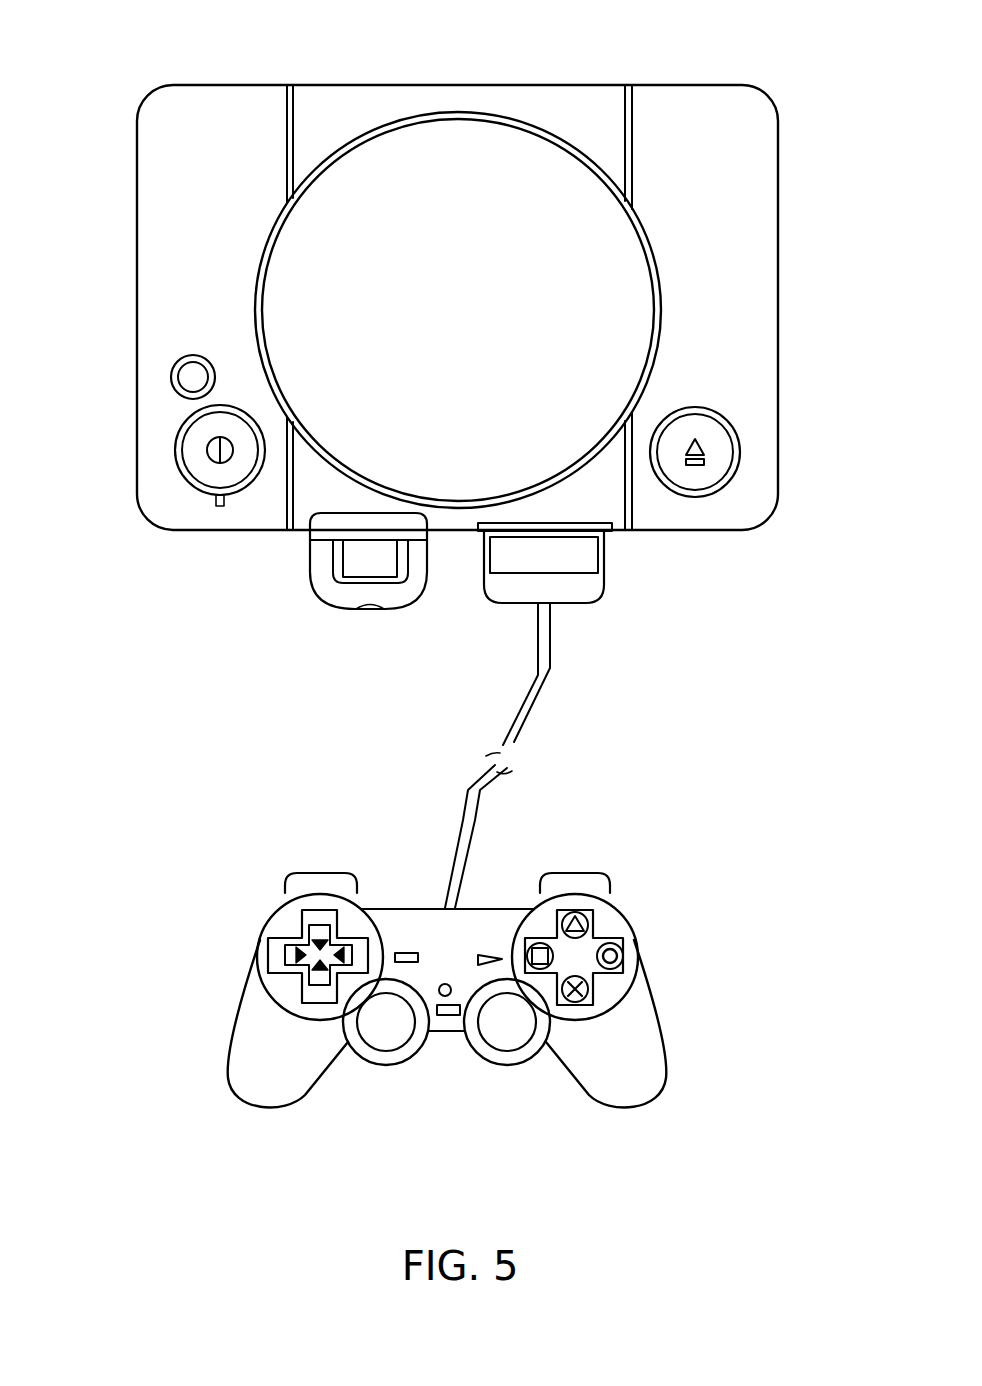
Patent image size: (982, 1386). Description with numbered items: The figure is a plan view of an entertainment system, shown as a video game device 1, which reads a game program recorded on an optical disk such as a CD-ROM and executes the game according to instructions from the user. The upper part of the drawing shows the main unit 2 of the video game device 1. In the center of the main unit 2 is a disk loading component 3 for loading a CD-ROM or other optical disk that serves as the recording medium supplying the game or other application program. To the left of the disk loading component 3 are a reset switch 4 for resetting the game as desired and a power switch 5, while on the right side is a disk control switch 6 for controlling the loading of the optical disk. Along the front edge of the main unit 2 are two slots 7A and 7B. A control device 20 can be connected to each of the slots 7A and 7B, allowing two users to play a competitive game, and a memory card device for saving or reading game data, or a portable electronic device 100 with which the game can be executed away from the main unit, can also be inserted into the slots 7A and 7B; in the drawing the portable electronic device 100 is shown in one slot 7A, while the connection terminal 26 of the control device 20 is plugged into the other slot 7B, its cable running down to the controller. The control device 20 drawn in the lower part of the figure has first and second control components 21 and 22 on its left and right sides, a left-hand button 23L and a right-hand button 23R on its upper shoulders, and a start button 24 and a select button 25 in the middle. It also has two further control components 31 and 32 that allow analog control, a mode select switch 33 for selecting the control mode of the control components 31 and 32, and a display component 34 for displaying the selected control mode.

The video game device 1 is at (685, 73).
The main unit 2 is at (714, 533).
The disk loading component 3 is at (495, 152).
The reset switch 4 is at (190, 373).
The power switch 5 is at (192, 446).
The disk control switch 6 is at (722, 447).
The slot 7A is at (310, 533).
The slot 7B is at (613, 533).
The portable electronic device 100 is at (316, 613).
The control device 20 is at (686, 1021).
The first control component 21 is at (262, 914).
The second control component 22 is at (616, 923).
The left-hand button 23L is at (309, 857).
The right-hand button 23R is at (629, 870).
The start button 24 is at (488, 952).
The select button 25 is at (405, 952).
The connection terminal 26 is at (597, 604).
The control component 31 is at (380, 1031).
The control component 32 is at (507, 1034).
The mode select switch 33 is at (440, 995).
The display component 34 is at (440, 1017).